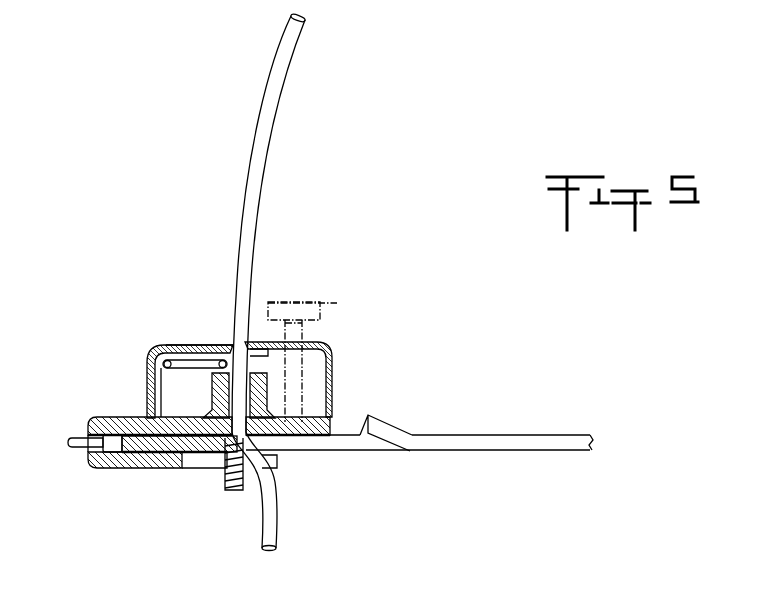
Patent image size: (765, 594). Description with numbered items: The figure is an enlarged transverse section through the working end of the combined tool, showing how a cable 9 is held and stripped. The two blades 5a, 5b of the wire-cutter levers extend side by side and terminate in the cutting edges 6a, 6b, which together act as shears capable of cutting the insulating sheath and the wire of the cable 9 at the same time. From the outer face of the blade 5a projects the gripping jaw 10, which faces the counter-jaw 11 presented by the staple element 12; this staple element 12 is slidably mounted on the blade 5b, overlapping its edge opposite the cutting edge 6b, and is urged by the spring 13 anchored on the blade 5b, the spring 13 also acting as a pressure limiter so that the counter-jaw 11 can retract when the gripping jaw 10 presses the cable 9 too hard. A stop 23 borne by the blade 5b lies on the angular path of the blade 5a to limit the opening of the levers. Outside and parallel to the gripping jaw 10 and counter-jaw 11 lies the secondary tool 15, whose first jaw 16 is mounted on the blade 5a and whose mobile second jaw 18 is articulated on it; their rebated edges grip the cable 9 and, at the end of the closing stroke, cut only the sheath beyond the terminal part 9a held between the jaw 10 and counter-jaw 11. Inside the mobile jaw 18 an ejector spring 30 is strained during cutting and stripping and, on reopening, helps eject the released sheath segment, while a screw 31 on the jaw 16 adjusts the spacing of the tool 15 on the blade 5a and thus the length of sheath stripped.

The cable 9 is at (268, 199).
The strand end portion 9a is at (203, 458).
The auxiliary or secondary tool 15 is at (166, 342).
The ejector spring 30 is at (202, 344).
The second jaw 18 is at (176, 370).
The counter-jaw 11 is at (208, 388).
The first jaw 16 is at (258, 344).
The gripping jaw 10 is at (268, 388).
The screw 31 is at (315, 360).
The blade 5a is at (320, 416).
The blade 5b is at (150, 470).
The stop 23 is at (386, 426).
The elastic return member (spring) 13 is at (72, 442).
The staple element 12 is at (90, 462).
The cutting edge 6a is at (258, 446).
The cutting edge 6b is at (231, 493).